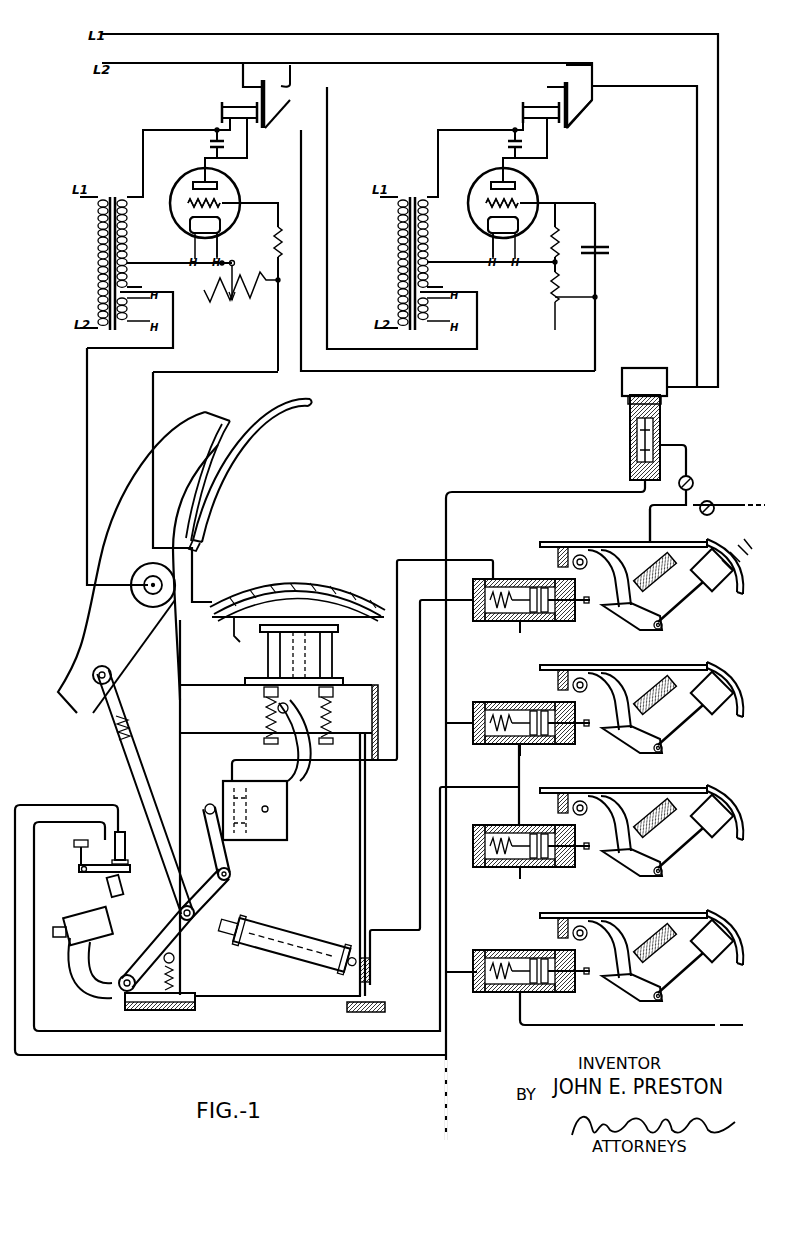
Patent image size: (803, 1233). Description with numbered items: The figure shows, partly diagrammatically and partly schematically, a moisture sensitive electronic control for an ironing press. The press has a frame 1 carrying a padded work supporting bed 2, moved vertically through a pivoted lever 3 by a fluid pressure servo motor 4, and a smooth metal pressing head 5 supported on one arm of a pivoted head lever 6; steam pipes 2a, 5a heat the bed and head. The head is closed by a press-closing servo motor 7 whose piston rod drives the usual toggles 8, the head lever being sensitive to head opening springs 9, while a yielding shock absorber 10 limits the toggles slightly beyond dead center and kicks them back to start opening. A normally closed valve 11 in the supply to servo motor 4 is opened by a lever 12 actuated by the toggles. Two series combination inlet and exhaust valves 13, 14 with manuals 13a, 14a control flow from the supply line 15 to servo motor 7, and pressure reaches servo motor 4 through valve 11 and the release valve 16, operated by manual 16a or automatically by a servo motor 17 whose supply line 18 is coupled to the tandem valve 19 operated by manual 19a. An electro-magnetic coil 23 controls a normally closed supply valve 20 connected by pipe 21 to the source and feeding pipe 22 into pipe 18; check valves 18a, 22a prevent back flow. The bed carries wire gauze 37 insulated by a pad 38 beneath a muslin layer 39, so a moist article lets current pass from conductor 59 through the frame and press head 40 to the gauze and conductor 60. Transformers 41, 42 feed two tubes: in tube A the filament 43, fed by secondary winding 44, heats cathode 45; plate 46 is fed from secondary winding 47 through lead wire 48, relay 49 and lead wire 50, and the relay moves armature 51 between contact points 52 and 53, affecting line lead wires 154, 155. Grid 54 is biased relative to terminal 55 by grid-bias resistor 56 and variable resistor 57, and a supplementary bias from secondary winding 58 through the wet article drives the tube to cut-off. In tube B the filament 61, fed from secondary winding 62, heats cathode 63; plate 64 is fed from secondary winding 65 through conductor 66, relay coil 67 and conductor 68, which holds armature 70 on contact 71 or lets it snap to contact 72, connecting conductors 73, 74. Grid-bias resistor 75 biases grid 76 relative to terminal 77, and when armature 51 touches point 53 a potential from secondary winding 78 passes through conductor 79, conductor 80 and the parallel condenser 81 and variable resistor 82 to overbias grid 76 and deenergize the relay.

The frame 1 is at (214, 685).
The padded work supporting bed 2 is at (352, 612).
The pipe 2a is at (237, 636).
The pivoted lever 3 is at (306, 770).
The pressure producing servo motor 4 is at (280, 832).
The pressing head 5 is at (310, 400).
The pipe 5a is at (205, 546).
The head lever 6 is at (110, 562).
The press-closing servo motor 7 is at (320, 957).
The toggles 8 is at (232, 858).
The head opening springs 9 is at (121, 738).
The yielding shock absorber 10 is at (100, 918).
The normally closed valve 11 is at (114, 832).
The lever 12 is at (80, 866).
The combination inlet and exhaust valve 13 is at (506, 701).
The manual 13a is at (733, 670).
The combination inlet and exhaust valve 14 is at (495, 824).
The manual 14a is at (725, 792).
The supply line 15 is at (447, 648).
The release valve 16 is at (512, 579).
The manual 16a is at (738, 565).
The servo motor 17 is at (643, 568).
The supply line 18 is at (650, 518).
The check valve 18a is at (712, 503).
The tandem valve 19 is at (500, 948).
The manual 19a is at (735, 915).
The normally closed fluid pressure supply valve 20 is at (661, 438).
The pipe 21 is at (518, 492).
The pipe 22 is at (688, 447).
The check valve 22a is at (693, 481).
The electro-magnetic coil 23 is at (621, 385).
The wire gauze 37 is at (285, 582).
The pad 38 is at (251, 599).
The muslin layer 39 is at (322, 584).
The press head 40 is at (244, 464).
The transformer 41 is at (112, 197).
The transformer 42 is at (412, 197).
The heating filament 43 is at (190, 229).
The secondary winding 44 is at (131, 311).
The cathode 45 is at (228, 228).
The plate 46 is at (194, 185).
The secondary winding 47 is at (130, 214).
The lead wire 48 is at (157, 130).
The relay 49 is at (222, 109).
The lead wire 50 is at (248, 150).
The armature 51 is at (264, 80).
The contact point 52 is at (257, 86).
The contact point 53 is at (296, 60).
The grid 54 is at (224, 203).
The terminal 55 is at (130, 266).
The grid-bias resistor 56 is at (282, 246).
The variable resistor 57 is at (232, 301).
The secondary winding 58 is at (132, 287).
The conductor 59 is at (87, 400).
The conductor 60 is at (185, 373).
The filament 61 is at (490, 231).
The secondary winding 62 is at (431, 311).
The cathode 63 is at (489, 221).
The plate 64 is at (492, 185).
The secondary winding 65 is at (431, 214).
The conductor 66 is at (452, 130).
The relay coil 67 is at (523, 109).
The conductor 68 is at (549, 148).
The armature 70 is at (578, 66).
The contact 71 is at (558, 85).
The contact 72 is at (580, 90).
The conductor 73 is at (487, 63).
The conductor 74 is at (648, 86).
The grid-bias resistor 75 is at (560, 243).
The grid 76 is at (522, 203).
The plate circuit terminal 77 is at (430, 265).
The secondary winding 78 is at (433, 287).
The conductor 79 is at (328, 177).
The conductor 80 is at (302, 206).
The condenser 81 is at (599, 250).
The variable resistor 82 is at (553, 319).
The line lead wire 154 is at (150, 63).
The line lead wire 155 is at (226, 24).
The tube A is at (232, 186).
The tube B is at (530, 186).